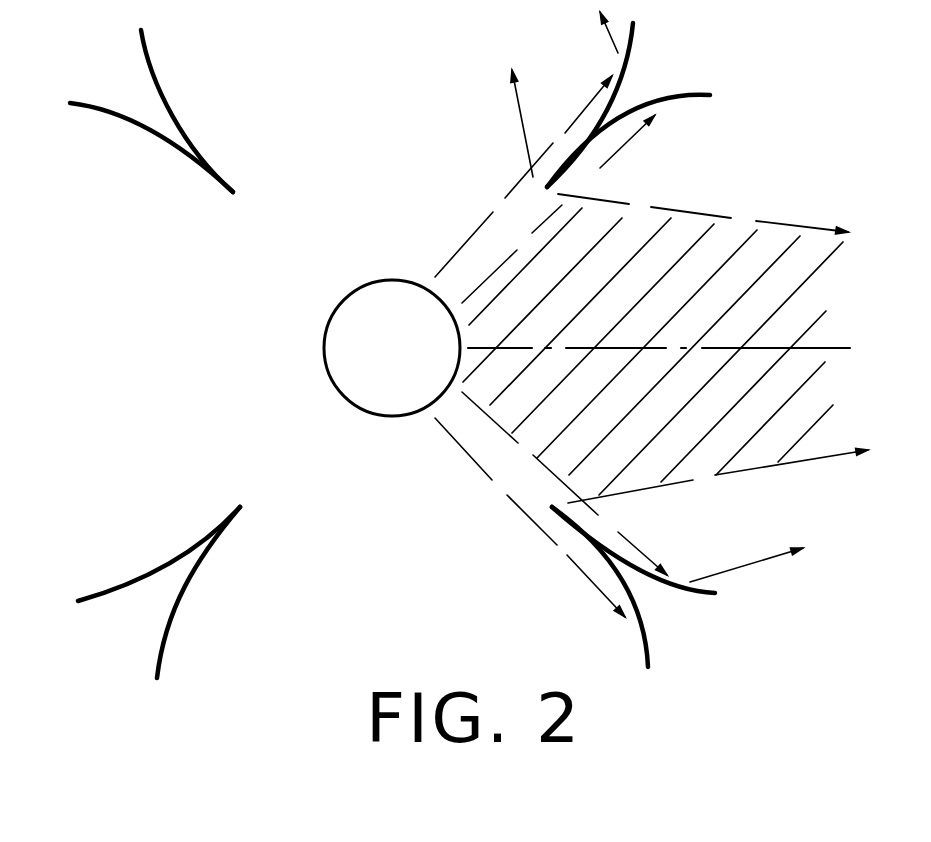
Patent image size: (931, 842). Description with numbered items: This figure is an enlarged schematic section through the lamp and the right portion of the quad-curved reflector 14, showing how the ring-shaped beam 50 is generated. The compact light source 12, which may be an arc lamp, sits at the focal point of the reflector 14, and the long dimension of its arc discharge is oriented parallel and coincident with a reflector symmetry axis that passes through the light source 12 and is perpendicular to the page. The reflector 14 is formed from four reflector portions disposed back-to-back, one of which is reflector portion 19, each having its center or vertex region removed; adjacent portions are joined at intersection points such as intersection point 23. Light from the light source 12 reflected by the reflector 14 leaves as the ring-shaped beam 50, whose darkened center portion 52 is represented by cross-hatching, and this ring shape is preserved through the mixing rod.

The light source 12 is at (376, 414).
The quad-curved reflector 14 is at (461, 154).
The reflector portion 19 is at (633, 30).
The intersection point 23 is at (684, 95).
The ring-shaped beam 50 is at (752, 158).
The darkened center portion 52 is at (767, 248).